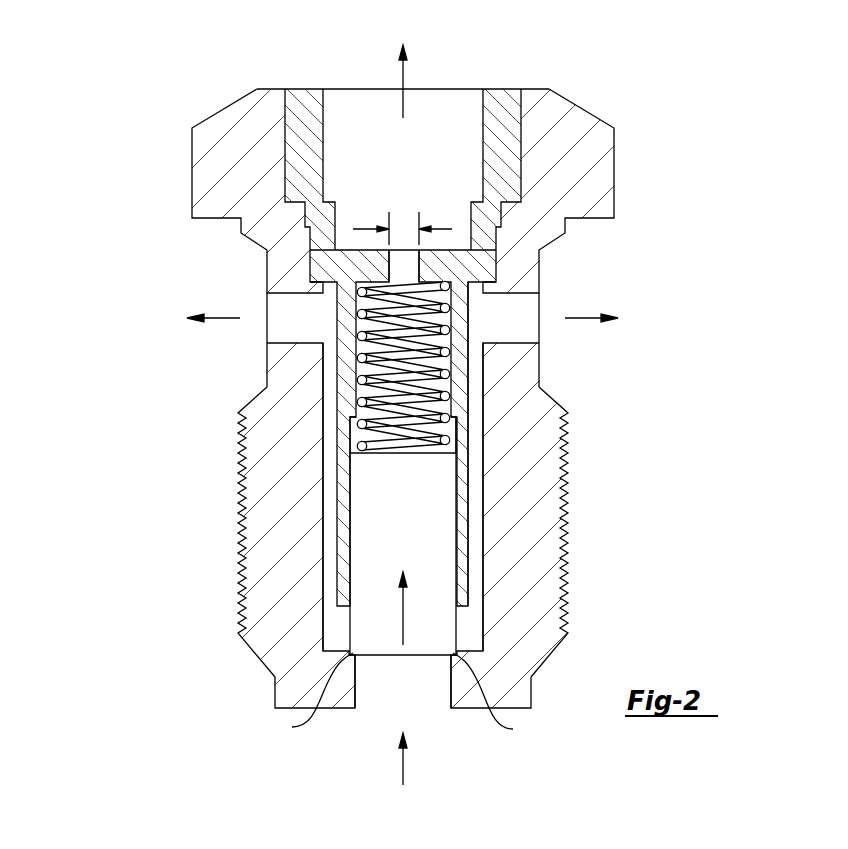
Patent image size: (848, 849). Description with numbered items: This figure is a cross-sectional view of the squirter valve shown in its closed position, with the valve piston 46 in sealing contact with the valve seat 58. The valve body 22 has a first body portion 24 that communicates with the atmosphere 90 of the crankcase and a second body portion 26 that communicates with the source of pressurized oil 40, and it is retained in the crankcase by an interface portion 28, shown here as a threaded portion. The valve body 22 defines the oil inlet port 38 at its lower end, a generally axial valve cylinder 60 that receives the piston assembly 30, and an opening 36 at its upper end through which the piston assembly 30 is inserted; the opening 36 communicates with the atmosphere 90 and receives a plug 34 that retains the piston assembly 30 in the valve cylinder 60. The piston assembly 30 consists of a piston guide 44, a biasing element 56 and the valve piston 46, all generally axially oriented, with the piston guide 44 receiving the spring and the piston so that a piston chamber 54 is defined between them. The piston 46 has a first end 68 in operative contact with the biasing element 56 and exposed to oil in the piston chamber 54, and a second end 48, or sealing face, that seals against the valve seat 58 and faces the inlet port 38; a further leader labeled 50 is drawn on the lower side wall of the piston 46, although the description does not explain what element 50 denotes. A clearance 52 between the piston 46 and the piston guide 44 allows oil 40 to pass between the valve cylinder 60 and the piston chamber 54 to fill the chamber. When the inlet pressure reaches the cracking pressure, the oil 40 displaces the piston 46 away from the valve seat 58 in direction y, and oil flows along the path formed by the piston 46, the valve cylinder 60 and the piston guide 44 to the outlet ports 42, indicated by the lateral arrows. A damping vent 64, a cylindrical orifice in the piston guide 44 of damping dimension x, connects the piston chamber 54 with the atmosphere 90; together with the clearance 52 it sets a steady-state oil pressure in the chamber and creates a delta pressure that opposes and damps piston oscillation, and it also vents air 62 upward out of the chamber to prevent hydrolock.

The valve body 22 is at (178, 143).
The first body portion 24 is at (383, 427).
The second body portion 26 is at (375, 518).
The interface portion 28 is at (563, 570).
The piston assembly 30 is at (108, 233).
The plug 34 is at (403, 138).
The opening 36 is at (511, 123).
The oil inlet port 38 is at (420, 695).
The pressurized oil 40 is at (225, 317).
The outlet port 42 is at (283, 328).
The piston guide 44 is at (470, 477).
The valve piston 46 is at (458, 630).
The second end 48 is at (380, 657).
The plunger side wall 50 is at (349, 631).
The clearance 52 is at (403, 574).
The piston chamber 54 is at (349, 427).
The biasing element 56 is at (410, 445).
The valve seat 58 is at (402, 697).
The valve cylinder 60 is at (328, 503).
The air 62 is at (403, 100).
The damping vent 64 is at (410, 263).
The first end 68 is at (453, 442).
The atmosphere 90 is at (450, 48).